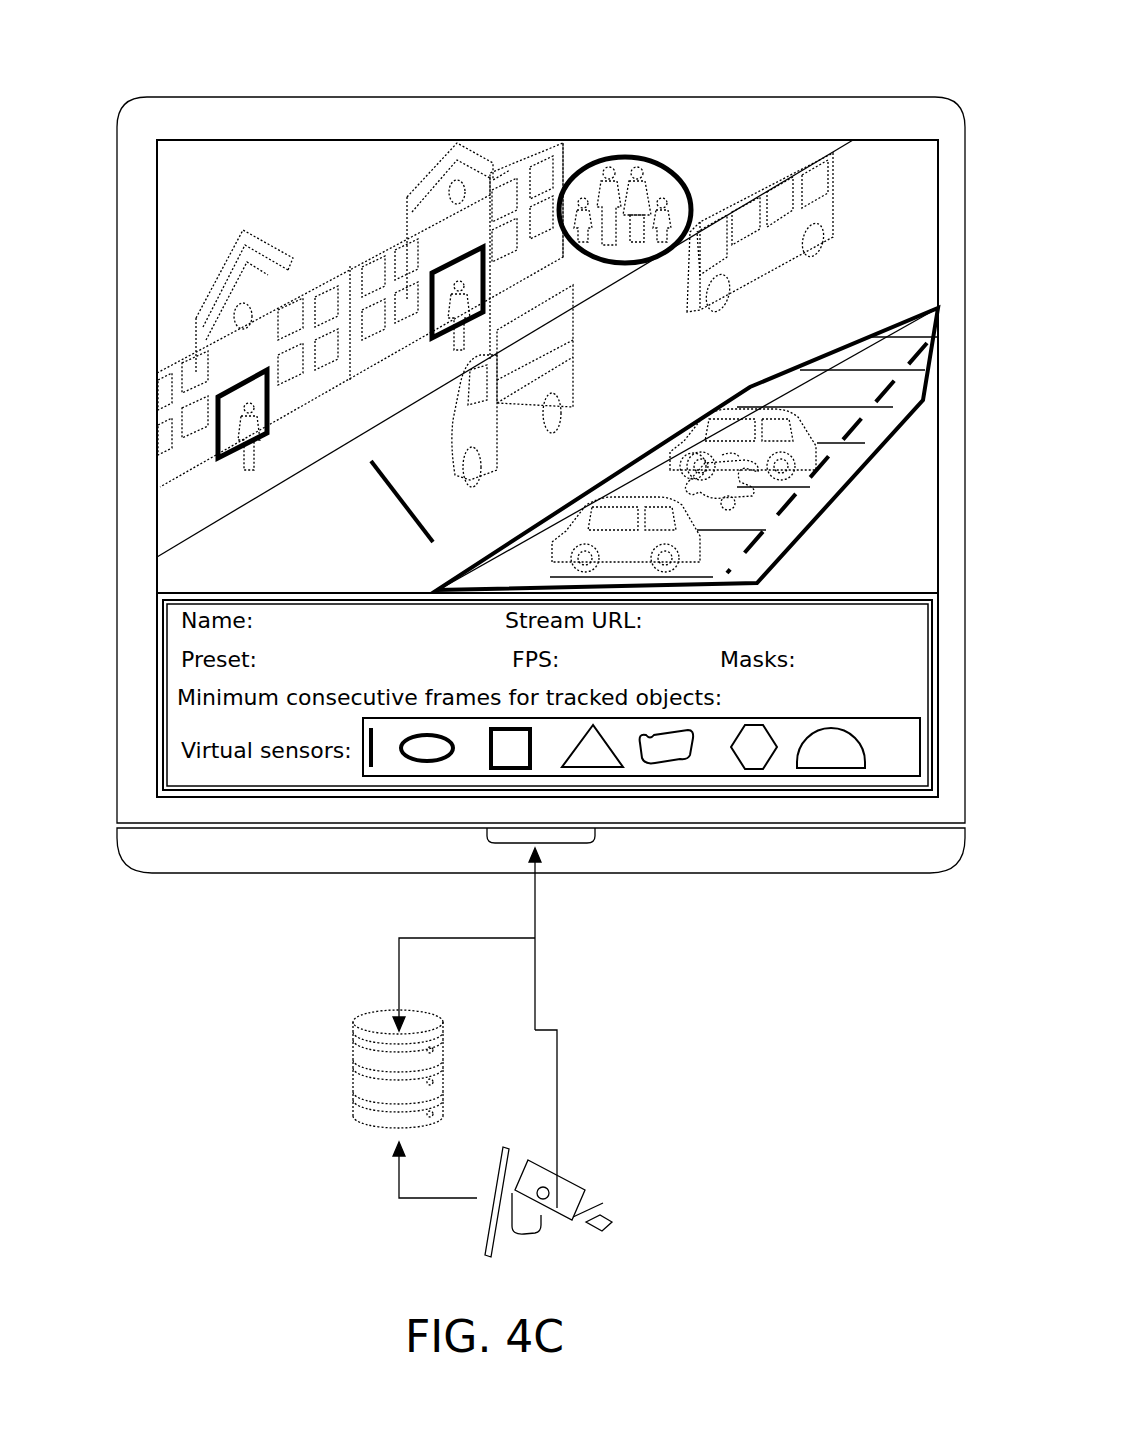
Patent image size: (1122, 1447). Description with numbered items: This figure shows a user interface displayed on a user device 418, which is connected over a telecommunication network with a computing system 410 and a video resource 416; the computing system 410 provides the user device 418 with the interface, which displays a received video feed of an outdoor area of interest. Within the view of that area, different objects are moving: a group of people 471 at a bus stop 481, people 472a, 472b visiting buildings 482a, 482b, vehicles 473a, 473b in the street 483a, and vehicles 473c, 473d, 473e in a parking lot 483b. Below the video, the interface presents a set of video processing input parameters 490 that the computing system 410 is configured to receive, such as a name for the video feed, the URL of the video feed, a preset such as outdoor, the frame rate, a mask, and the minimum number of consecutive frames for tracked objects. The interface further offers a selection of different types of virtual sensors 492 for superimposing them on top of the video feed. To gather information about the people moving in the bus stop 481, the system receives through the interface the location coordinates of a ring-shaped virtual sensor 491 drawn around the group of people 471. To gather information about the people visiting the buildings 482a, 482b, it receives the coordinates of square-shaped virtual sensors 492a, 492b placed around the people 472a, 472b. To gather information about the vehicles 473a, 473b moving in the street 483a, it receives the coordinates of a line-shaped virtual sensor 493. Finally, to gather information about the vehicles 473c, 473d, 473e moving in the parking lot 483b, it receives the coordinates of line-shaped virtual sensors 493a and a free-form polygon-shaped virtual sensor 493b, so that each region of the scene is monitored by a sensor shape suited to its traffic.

The computing system 410 is at (363, 1117).
The video resource 416 is at (587, 1188).
The user device 418 is at (652, 845).
The group of people 471 is at (623, 208).
The person visiting building 472a is at (253, 413).
The person visiting building 472b is at (402, 178).
The vehicle in street 473a is at (568, 386).
The vehicle in street 473b is at (772, 233).
The vehicle in parking lot 473c is at (590, 540).
The vehicle in parking lot 473d is at (635, 481).
The vehicle in parking lot 473e is at (689, 444).
The bus stop 481 is at (620, 207).
The building 482a is at (280, 307).
The building 482b is at (513, 165).
The street 483a is at (915, 185).
The parking lot 483b is at (867, 363).
The video processing input parameters 490 is at (830, 665).
The ring-shaped virtual sensor 491 is at (683, 183).
The virtual sensors 492 is at (785, 753).
The square-shaped virtual sensor 492a is at (460, 287).
The square-shaped virtual sensor 492b is at (225, 390).
The line-shaped virtual sensor 493 is at (347, 501).
The line-shaped virtual sensor 493a is at (810, 498).
The free-form polygon-shaped virtual sensor 493b is at (936, 312).